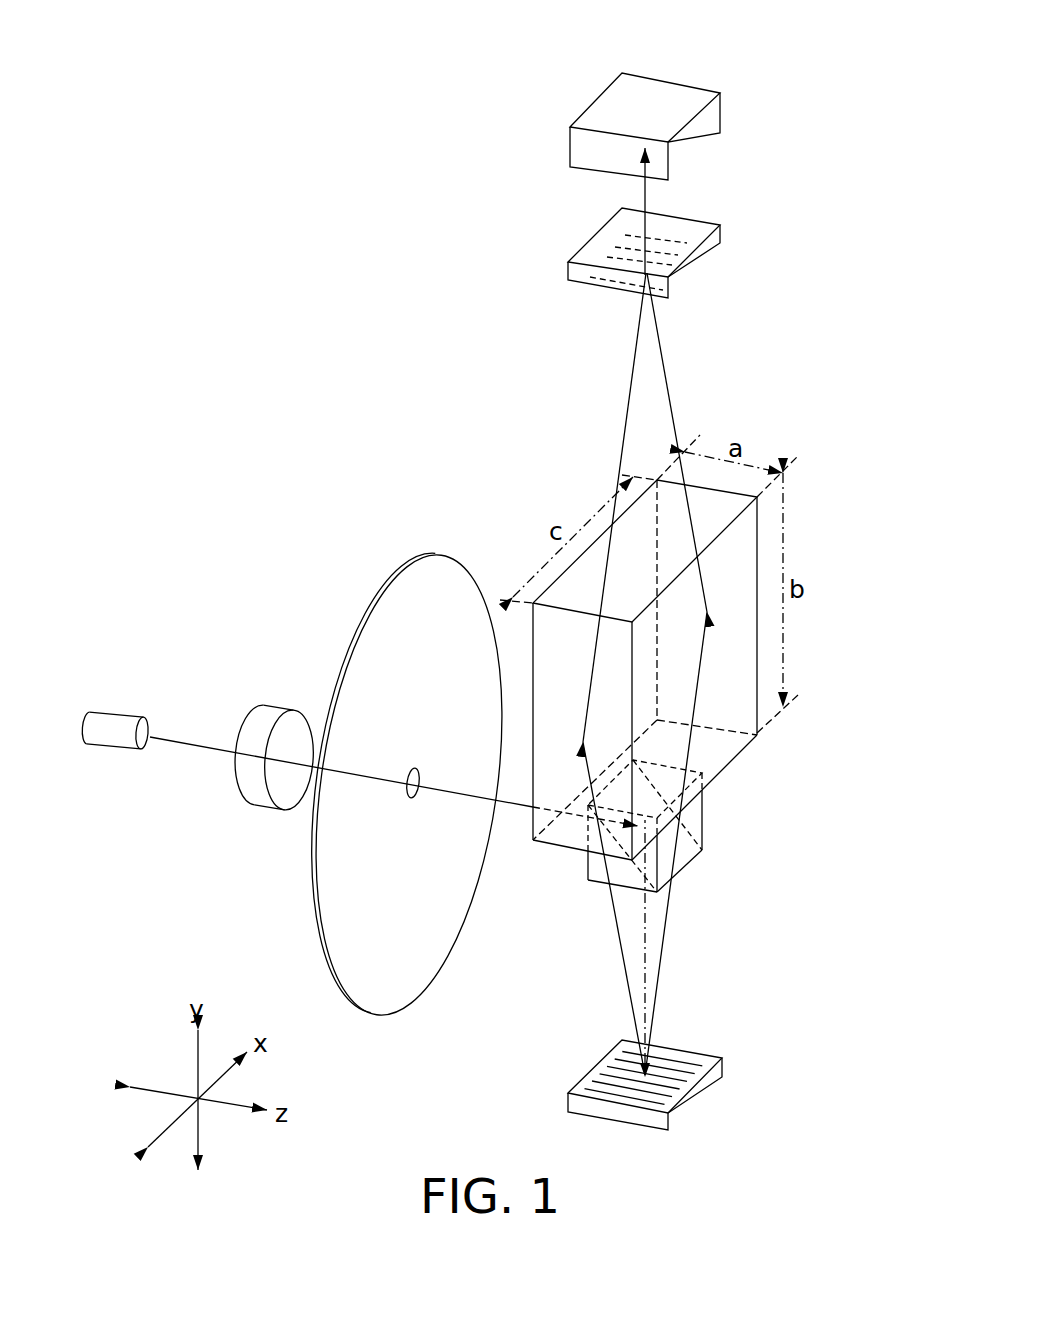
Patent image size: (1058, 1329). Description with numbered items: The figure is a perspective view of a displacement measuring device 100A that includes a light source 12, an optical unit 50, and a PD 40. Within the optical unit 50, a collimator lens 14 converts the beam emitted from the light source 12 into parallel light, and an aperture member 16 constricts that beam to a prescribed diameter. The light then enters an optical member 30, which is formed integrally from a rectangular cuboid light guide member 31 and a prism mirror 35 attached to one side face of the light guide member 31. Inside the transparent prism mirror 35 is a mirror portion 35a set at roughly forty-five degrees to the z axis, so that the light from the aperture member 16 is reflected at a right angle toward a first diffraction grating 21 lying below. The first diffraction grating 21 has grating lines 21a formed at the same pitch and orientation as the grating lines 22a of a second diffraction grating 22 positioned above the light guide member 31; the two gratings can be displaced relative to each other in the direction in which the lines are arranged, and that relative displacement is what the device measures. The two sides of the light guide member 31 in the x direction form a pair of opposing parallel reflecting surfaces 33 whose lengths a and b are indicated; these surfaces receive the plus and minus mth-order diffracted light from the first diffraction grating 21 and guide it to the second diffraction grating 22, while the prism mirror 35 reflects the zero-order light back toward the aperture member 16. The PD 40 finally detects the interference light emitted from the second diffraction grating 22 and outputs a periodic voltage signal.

The displacement measuring device 100A is at (376, 126).
The light source 12 is at (110, 742).
The collimator lens 14 is at (265, 797).
The aperture member 16 is at (457, 578).
The first diffraction grating 21 is at (692, 1097).
The grating lines 21a is at (683, 1060).
The second diffraction grating 22 is at (697, 265).
The grating lines 22a is at (610, 279).
The optical member 30 is at (678, 723).
The light guide member 31 is at (573, 593).
The reflecting surfaces 33 is at (730, 558).
The prism mirror 35 is at (600, 868).
The mirror portion 35a is at (683, 855).
The PD (photodetector) 40 is at (710, 120).
The optical unit 50 is at (512, 1006).